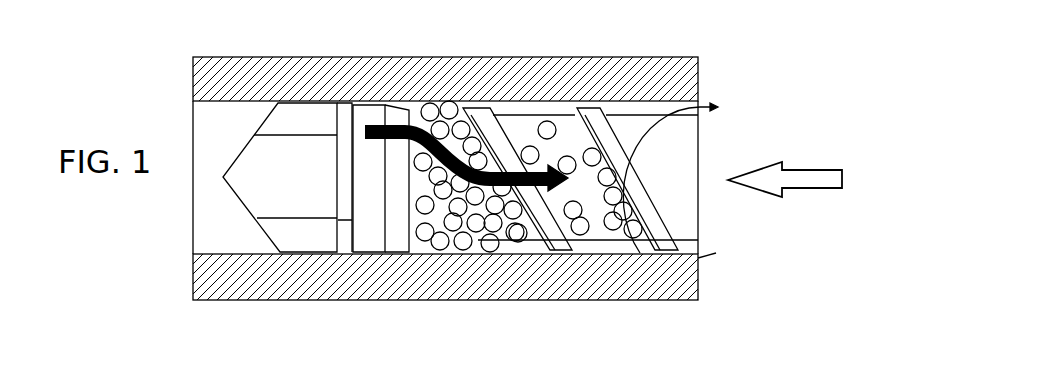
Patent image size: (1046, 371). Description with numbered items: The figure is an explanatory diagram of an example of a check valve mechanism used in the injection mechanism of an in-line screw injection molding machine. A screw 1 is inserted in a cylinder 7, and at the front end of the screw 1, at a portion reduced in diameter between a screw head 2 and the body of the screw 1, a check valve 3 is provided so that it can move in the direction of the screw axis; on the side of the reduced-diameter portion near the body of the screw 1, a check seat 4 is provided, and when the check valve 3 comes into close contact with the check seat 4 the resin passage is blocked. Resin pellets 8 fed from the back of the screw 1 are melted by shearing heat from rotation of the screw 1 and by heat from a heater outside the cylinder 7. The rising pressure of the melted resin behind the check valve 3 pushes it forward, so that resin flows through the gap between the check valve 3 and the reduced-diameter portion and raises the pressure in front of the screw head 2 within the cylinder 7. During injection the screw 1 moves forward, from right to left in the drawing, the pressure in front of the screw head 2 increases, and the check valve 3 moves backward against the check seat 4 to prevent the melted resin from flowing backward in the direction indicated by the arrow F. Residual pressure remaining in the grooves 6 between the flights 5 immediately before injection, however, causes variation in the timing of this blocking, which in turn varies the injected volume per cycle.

The screw 1 is at (631, 124).
The screw head 2 is at (298, 123).
The check valve 3 is at (362, 237).
The check seat 4 is at (398, 242).
The flights 5 is at (658, 228).
The grooves 6 is at (533, 238).
The cylinder 7 is at (352, 69).
The resin pellets 8 is at (491, 247).
The arrow F is at (459, 130).